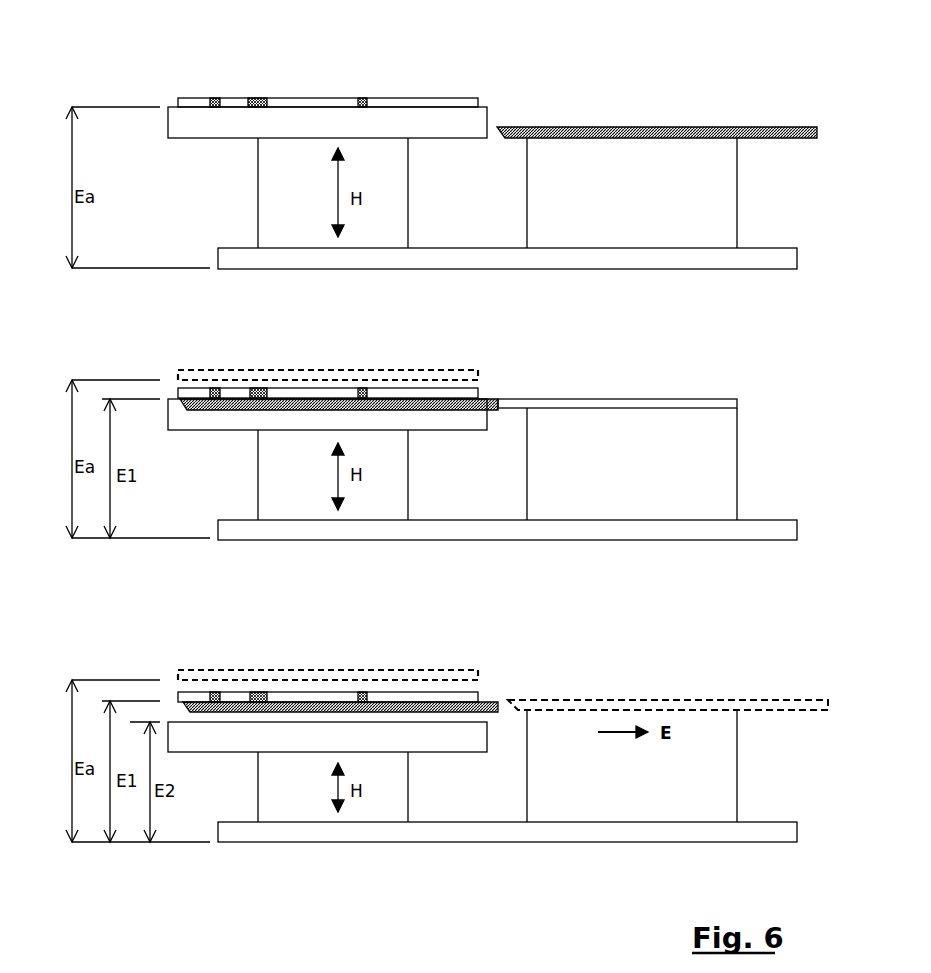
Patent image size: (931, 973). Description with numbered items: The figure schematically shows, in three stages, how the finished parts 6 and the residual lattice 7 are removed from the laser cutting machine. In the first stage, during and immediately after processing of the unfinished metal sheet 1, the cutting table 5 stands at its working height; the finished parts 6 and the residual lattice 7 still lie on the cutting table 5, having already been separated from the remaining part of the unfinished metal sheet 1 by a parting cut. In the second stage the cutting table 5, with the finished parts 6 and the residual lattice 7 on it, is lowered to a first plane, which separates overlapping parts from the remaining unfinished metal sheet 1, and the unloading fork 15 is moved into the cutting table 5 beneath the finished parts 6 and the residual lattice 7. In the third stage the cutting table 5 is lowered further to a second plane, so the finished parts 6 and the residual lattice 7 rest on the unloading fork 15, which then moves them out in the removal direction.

The unfinished metal sheet 1 is at (408, 370).
The cutting table 5 is at (317, 118).
The finished parts 6 is at (387, 98).
The residual lattice 7 is at (257, 100).
The unloading fork 15 is at (647, 127).